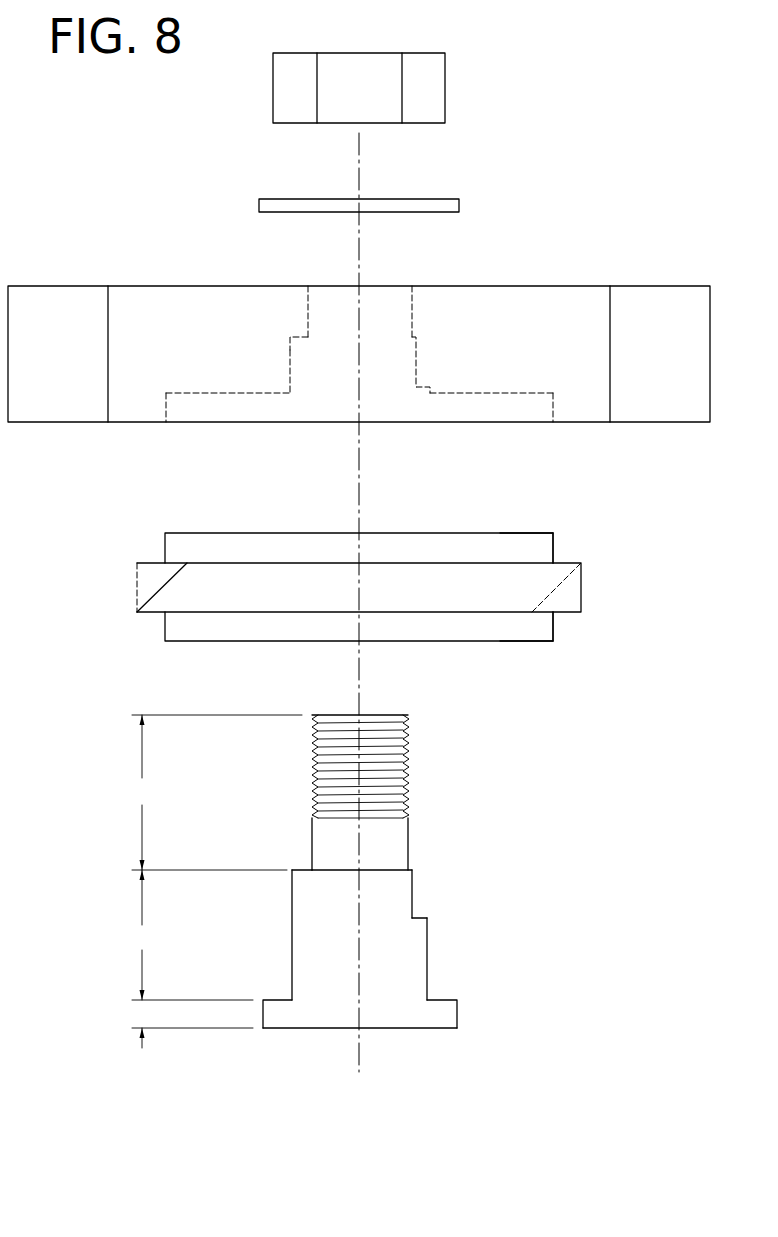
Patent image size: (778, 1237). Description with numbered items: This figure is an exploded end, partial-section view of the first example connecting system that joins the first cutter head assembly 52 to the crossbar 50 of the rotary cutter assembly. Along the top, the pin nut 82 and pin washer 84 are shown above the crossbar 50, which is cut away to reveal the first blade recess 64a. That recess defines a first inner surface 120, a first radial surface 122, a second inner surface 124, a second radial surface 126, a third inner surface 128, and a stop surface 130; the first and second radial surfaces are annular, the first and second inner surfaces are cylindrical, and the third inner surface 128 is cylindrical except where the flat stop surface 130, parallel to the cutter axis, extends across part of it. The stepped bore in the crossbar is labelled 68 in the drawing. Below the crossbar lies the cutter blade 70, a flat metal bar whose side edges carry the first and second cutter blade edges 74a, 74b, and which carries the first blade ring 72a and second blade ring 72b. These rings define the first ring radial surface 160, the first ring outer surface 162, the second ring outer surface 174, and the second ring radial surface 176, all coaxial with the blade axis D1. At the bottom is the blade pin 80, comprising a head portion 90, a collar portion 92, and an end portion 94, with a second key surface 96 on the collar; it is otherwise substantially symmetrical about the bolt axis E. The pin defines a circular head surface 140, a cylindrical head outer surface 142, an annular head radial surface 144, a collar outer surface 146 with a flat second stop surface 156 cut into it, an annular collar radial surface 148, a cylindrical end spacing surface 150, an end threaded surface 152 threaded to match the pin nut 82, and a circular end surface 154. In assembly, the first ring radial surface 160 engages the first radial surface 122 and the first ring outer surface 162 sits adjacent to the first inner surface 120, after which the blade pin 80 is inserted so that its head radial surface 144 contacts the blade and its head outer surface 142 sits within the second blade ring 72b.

The crossbar 50 is at (140, 300).
The first cutter head assembly 52 is at (424, 905).
The first blade recess 64a is at (508, 407).
The stepped bore 68 is at (400, 365).
The cutter blade 70 is at (410, 580).
The first blade ring 72a is at (165, 548).
The second blade ring 72b is at (220, 625).
The first cutter blade edge 74a is at (137, 612).
The second cutter blade edge 74b is at (575, 570).
The blade pin 80 is at (306, 1032).
The pin nut 82 is at (430, 83).
The pin washer 84 is at (440, 205).
The head portion 90 is at (192, 1025).
The collar portion 92 is at (192, 935).
The end portion 94 is at (217, 792).
The second key surface 96 is at (415, 883).
The first inner surface 120 is at (188, 412).
The first radial surface 122 is at (222, 395).
The second inner surface 124 is at (287, 378).
The second radial surface 126 is at (285, 350).
The third inner surface 128 is at (303, 312).
The stop surface 130 is at (417, 395).
The head surface 140 is at (403, 1030).
The head outer surface 142 is at (460, 1013).
The head radial surface 144 is at (443, 997).
The collar outer surface 146 is at (292, 960).
The collar radial surface 148 is at (302, 868).
The end spacing surface 150 is at (393, 845).
The end threaded surface 152 is at (383, 770).
The end surface 154 is at (385, 715).
The second stop surface 156 is at (420, 915).
The first ring radial surface 160 is at (530, 533).
The first ring outer surface 162 is at (555, 550).
The second ring outer surface 174 is at (555, 628).
The second ring radial surface 176 is at (528, 642).
The blade axis D1 is at (355, 650).
The bolt axis E is at (360, 1050).